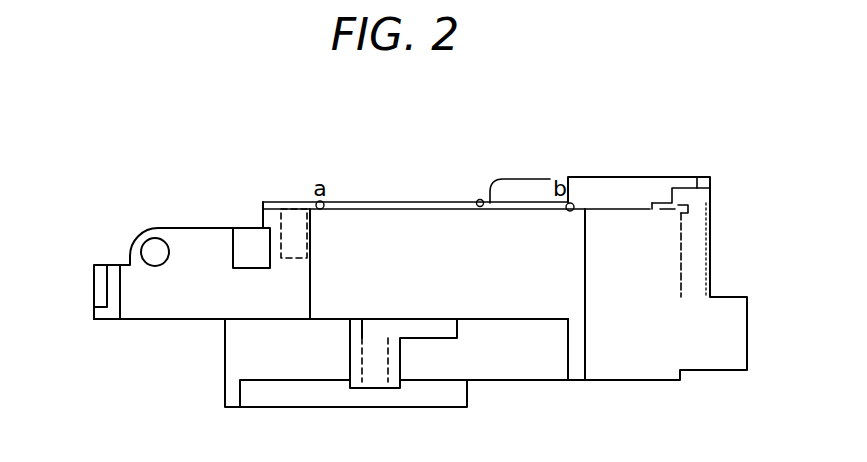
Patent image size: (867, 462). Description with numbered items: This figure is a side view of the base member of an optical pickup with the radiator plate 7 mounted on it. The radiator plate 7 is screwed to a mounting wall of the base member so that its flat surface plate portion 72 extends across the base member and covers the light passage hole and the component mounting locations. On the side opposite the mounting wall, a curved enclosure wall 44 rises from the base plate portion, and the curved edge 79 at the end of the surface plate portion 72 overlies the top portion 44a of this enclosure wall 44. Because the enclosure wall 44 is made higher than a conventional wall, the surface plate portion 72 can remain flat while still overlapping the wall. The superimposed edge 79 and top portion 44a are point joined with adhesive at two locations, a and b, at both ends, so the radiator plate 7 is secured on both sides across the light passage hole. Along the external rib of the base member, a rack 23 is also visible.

The radiator plate 7 is at (375, 198).
The rack 23 is at (94, 288).
The curved edge 79 is at (398, 203).
The surface plate portion 72 is at (446, 200).
The curved enclosure wall 44 is at (468, 220).
The top portion 44a is at (483, 210).